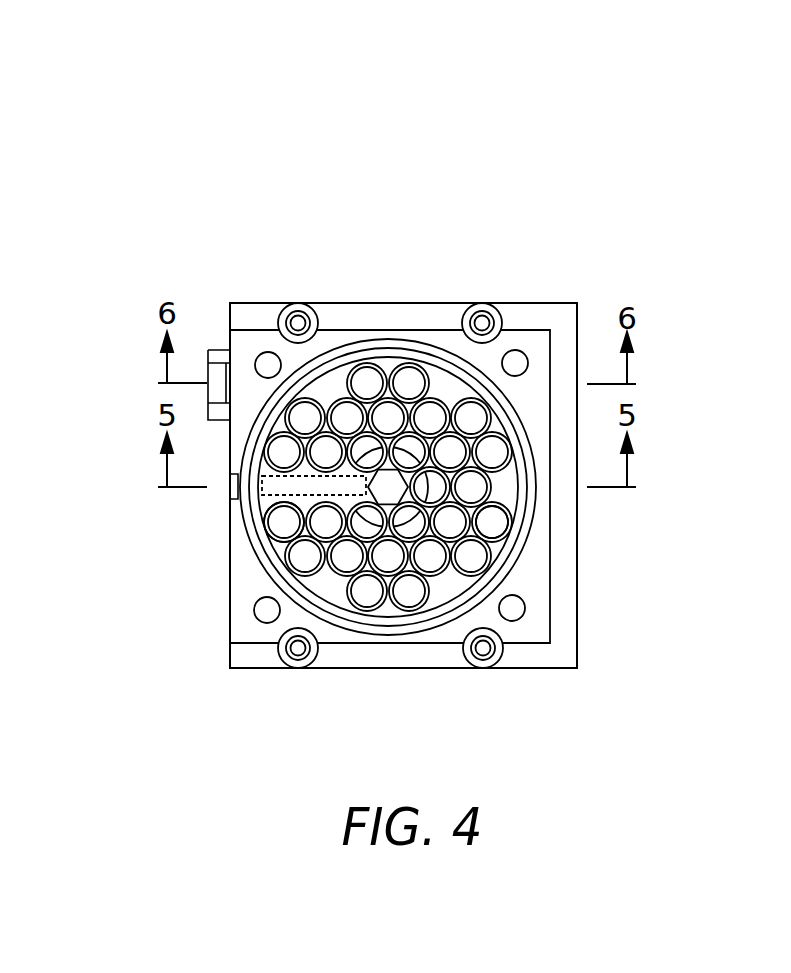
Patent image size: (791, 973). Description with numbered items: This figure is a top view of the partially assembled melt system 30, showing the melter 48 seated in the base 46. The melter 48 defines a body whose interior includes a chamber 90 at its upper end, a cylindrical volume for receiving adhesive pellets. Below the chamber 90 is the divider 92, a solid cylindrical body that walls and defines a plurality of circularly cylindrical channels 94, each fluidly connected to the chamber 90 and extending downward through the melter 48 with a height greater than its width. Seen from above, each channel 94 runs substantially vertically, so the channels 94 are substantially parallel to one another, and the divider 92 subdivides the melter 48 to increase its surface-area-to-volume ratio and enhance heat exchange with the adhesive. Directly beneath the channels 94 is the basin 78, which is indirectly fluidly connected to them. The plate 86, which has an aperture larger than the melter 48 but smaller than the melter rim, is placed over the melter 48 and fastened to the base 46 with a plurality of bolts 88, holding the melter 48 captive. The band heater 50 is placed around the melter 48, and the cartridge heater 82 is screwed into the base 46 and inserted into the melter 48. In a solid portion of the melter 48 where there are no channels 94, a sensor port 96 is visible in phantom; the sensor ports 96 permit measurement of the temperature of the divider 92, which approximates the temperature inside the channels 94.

The melt system 30 is at (126, 162).
The base 46 is at (300, 302).
The melter 48 is at (365, 348).
The band heater 50 is at (404, 362).
The channels 94 is at (422, 365).
The plate 86 is at (520, 328).
The bolts 88 is at (525, 608).
The divider 92 is at (503, 494).
The cartridge heater 82 is at (498, 535).
The chamber 90 is at (452, 588).
The basin 78 is at (288, 523).
The sensor ports 96 is at (264, 496).